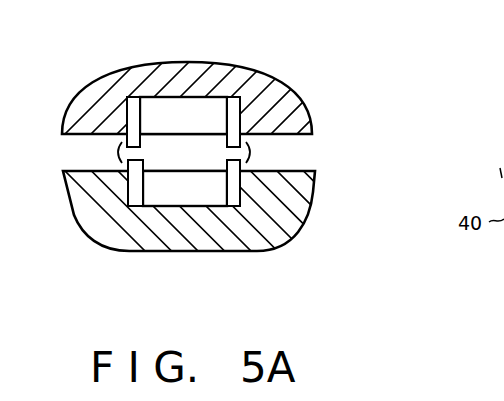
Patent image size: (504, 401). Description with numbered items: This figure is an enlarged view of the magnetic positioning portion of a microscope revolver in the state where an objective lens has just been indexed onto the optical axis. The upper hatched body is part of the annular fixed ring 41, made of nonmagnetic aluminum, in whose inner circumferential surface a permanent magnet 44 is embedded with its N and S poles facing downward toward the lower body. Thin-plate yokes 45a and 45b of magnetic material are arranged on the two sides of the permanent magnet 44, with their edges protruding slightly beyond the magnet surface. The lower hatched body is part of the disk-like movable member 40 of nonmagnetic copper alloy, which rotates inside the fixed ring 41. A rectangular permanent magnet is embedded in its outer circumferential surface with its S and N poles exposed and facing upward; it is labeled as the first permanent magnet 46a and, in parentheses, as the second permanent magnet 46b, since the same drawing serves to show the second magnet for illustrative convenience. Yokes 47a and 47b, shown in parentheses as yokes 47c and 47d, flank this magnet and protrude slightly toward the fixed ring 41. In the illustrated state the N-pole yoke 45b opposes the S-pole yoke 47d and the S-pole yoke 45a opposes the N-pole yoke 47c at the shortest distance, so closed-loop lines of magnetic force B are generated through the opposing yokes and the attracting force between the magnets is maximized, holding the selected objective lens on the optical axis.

The movable member 40 is at (88, 219).
The fixed ring 41 is at (103, 72).
The permanent magnet 44 is at (187, 100).
The yoke 45a is at (231, 102).
The yoke 45b is at (135, 102).
The first permanent magnet 46a is at (179, 251).
The second permanent magnet 46b is at (184, 198).
The yoke 47a is at (248, 246).
The yoke 47b is at (98, 246).
The yoke 47c is at (244, 204).
The yoke 47d is at (128, 207).
The lines of magnetic force B is at (253, 153).